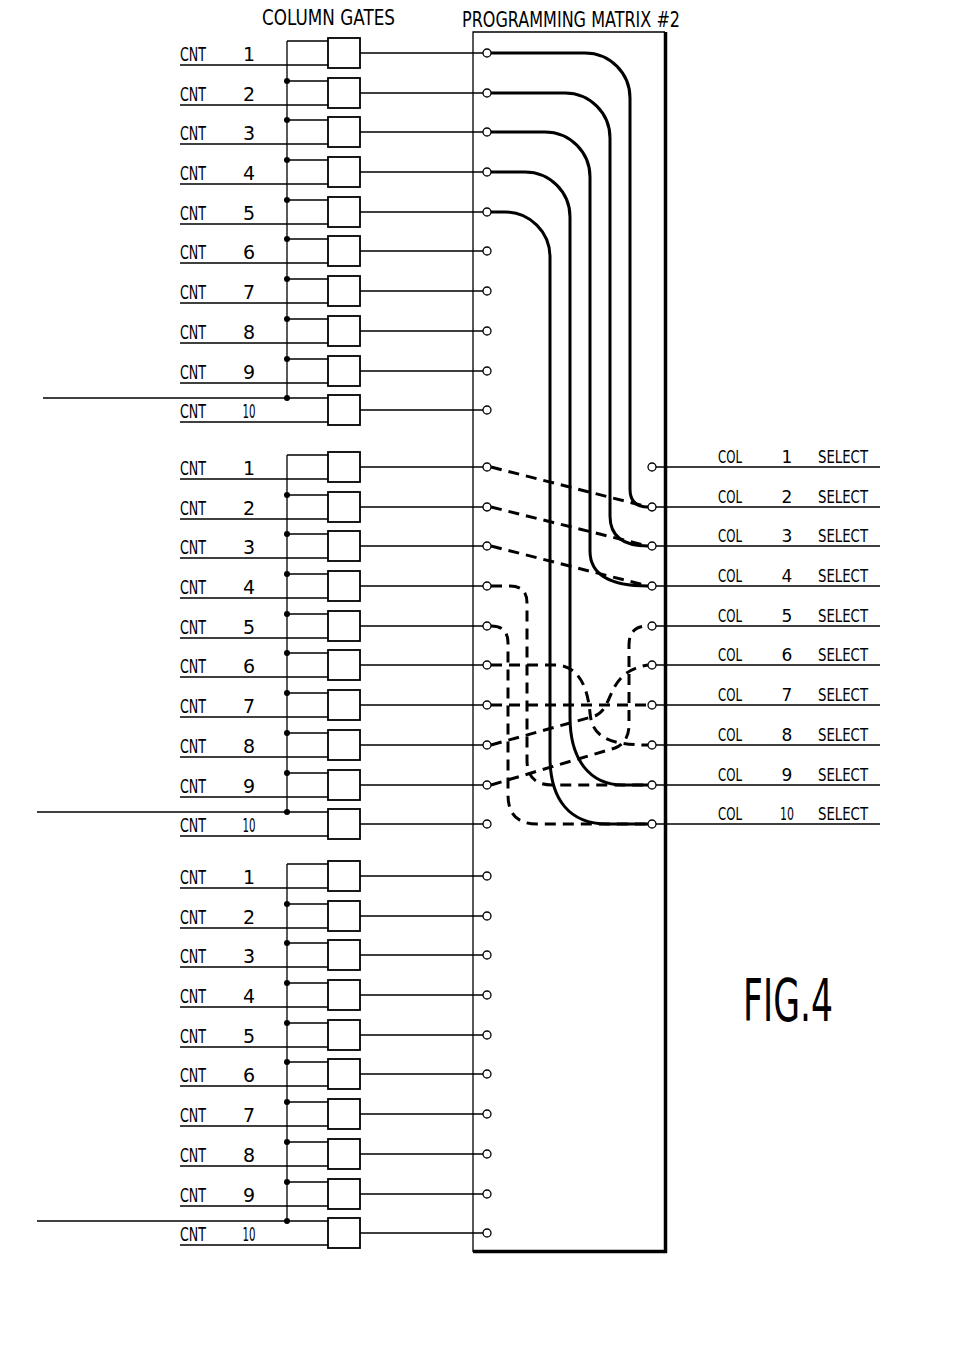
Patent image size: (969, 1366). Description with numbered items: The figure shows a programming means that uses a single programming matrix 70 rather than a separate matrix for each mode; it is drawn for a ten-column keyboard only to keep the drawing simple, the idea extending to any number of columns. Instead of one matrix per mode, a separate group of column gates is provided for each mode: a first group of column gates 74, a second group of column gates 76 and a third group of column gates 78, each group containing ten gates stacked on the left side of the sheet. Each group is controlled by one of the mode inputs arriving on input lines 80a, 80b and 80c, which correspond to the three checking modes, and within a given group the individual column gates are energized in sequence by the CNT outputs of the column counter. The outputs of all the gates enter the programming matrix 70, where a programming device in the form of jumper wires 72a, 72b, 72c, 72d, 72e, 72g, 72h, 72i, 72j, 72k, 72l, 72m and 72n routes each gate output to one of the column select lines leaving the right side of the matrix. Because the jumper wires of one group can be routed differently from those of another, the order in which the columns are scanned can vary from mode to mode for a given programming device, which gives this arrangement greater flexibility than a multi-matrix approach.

The programming matrix 70 is at (665, 1082).
The jumper wire 72a is at (630, 231).
The jumper wire 72b is at (610, 254).
The jumper wire 72c is at (590, 281).
The jumper wire 72d is at (570, 305).
The jumper wire 72e is at (550, 329).
The jumper wire 72g is at (494, 505).
The jumper wire 72h is at (494, 544).
The jumper wire 72i is at (494, 584).
The jumper wire 72j is at (494, 624).
The jumper wire 72k is at (494, 663).
The jumper wire 72l is at (494, 703).
The jumper wire 72m is at (494, 743).
The jumper wire 72n is at (494, 783).
The first group of column gates 74 is at (361, 401).
The second group of column gates 76 is at (361, 815).
The third group of column gates 78 is at (361, 1224).
The input line 80a is at (93, 398).
The input line 80b is at (90, 812).
The input line 80c is at (90, 1221).